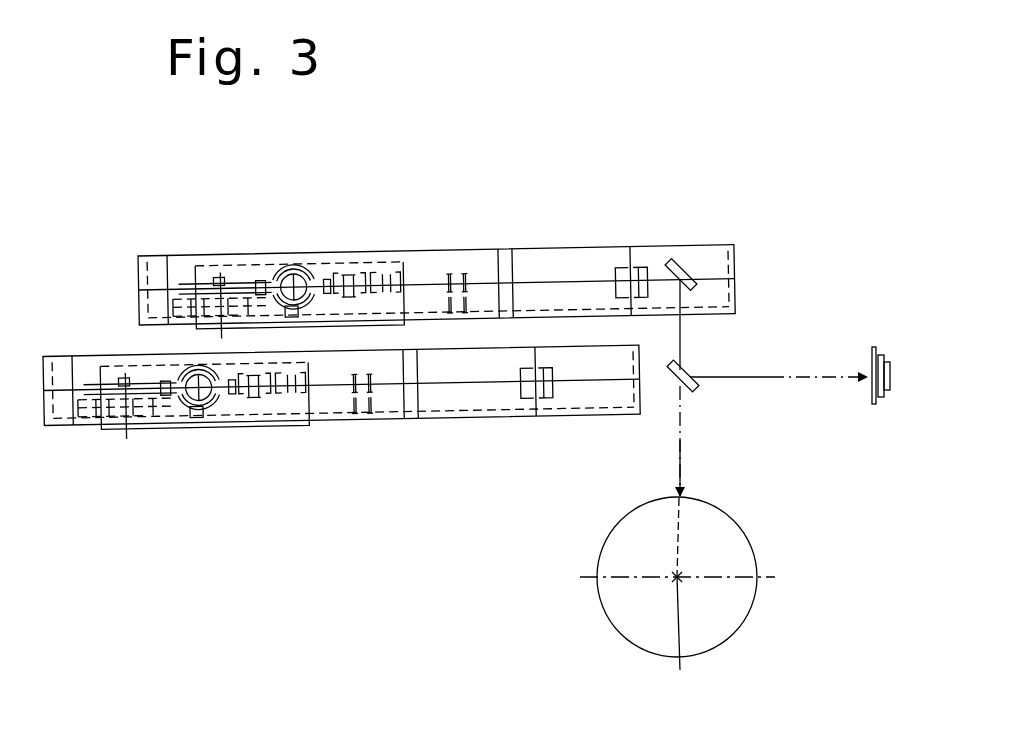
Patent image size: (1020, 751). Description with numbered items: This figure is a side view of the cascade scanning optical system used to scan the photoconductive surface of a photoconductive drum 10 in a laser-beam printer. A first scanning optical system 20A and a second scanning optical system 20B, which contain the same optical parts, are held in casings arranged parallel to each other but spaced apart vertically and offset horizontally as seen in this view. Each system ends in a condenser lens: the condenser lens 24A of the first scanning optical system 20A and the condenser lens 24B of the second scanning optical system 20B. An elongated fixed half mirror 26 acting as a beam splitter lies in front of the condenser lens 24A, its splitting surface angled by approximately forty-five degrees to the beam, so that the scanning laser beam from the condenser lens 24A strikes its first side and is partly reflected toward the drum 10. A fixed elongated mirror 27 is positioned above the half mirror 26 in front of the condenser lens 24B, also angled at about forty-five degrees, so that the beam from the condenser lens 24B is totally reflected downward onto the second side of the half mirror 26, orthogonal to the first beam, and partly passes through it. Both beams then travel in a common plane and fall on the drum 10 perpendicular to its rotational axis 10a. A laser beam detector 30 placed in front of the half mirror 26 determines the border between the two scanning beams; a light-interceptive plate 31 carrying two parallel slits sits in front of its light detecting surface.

The photoconductive drum 10 is at (742, 527).
The rotational axis 10a is at (677, 577).
The first scanning optical system 20A is at (330, 381).
The second scanning optical system 20B is at (435, 250).
The condenser lens 24A is at (542, 416).
The condenser lens 24B is at (620, 268).
The half mirror 26 is at (692, 367).
The mirror 27 is at (676, 262).
The laser beam detector 30 is at (881, 355).
The light-interceptive plate 31 is at (870, 374).